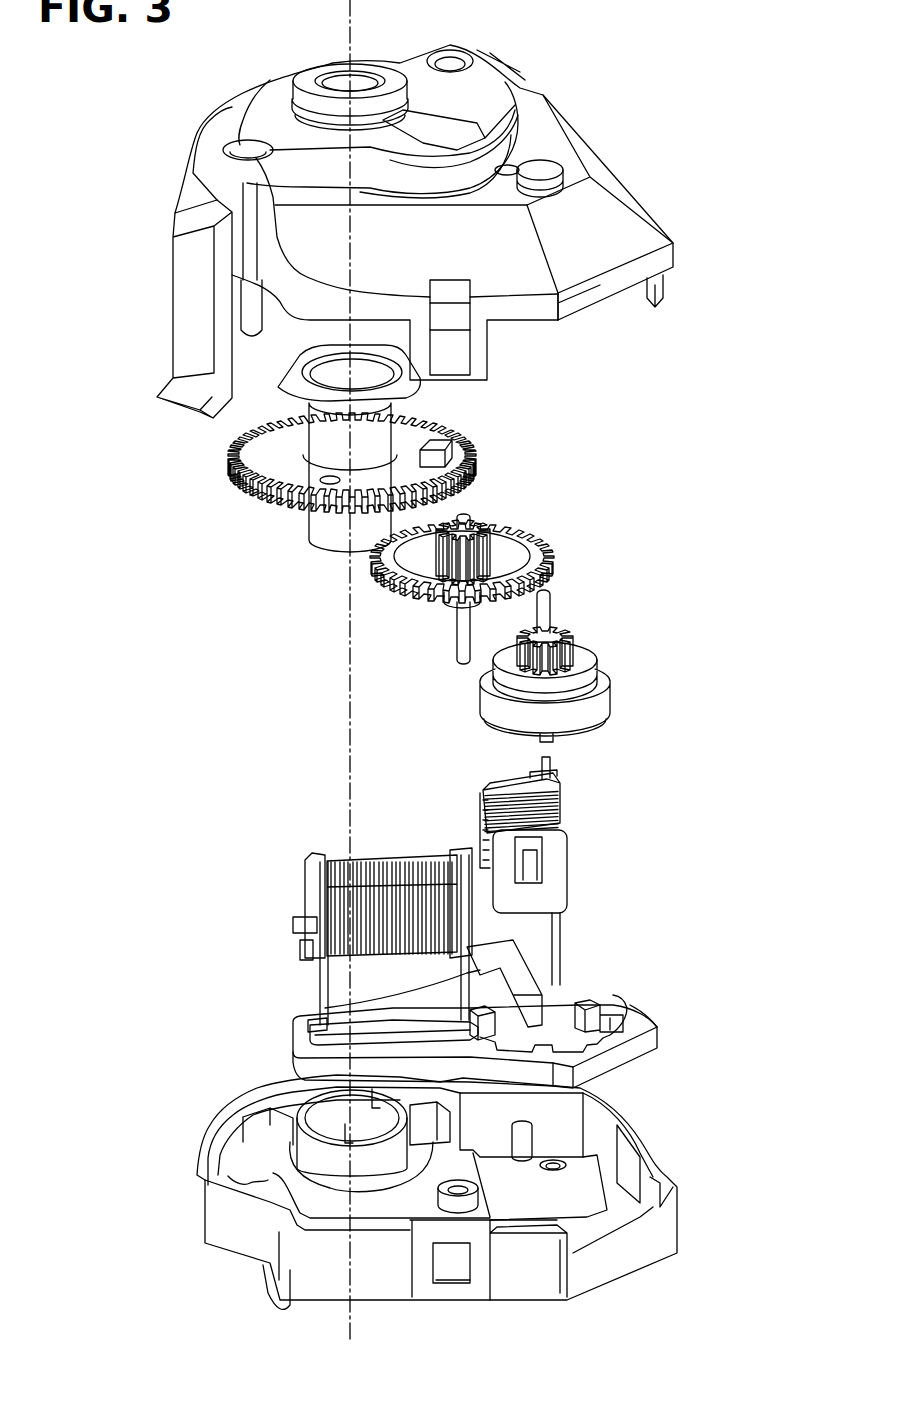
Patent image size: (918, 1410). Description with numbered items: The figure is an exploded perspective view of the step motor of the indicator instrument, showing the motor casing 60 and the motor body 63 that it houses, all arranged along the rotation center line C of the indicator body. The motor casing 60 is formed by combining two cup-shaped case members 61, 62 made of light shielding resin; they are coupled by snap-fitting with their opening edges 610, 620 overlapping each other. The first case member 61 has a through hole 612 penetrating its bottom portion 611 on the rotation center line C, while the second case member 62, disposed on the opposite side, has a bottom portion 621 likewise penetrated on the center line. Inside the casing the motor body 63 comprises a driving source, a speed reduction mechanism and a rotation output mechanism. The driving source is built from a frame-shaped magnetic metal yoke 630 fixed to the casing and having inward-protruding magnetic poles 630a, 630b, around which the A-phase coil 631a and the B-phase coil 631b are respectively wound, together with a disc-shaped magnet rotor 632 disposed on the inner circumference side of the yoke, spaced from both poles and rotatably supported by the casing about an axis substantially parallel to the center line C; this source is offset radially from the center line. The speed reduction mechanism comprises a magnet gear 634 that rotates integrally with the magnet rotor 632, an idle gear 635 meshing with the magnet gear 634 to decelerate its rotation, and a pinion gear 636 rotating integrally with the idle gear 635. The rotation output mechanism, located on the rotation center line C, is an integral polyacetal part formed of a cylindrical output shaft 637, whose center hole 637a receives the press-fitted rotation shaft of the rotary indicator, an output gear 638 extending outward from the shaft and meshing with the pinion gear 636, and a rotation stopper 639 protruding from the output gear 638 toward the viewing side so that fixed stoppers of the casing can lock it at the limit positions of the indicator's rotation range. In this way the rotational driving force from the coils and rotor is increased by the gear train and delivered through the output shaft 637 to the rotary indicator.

The motor casing 60 is at (445, 681).
The case member 61 is at (672, 260).
The case member 62 is at (680, 1227).
The motor body 63 is at (489, 452).
The opening edge 610 is at (605, 297).
The bottom portion 611 is at (272, 103).
The through hole 612 is at (377, 80).
The opening edge 620 is at (627, 1123).
The bottom portion 621 is at (428, 1212).
The yoke 630 is at (300, 1045).
The magnetic pole 630a is at (343, 1037).
The magnetic pole 630b is at (530, 995).
The coil 631a is at (345, 865).
The coil 631b is at (560, 817).
The magnet rotor 632 is at (590, 703).
The magnet gear 634 is at (575, 640).
The idle gear 635 is at (547, 550).
The pinion gear 636 is at (478, 524).
The output shaft 637 is at (333, 433).
The center hole 637a is at (340, 410).
The output gear 638 is at (247, 497).
The rotation stopper 639 is at (443, 442).
The rotation center line C is at (346, 706).